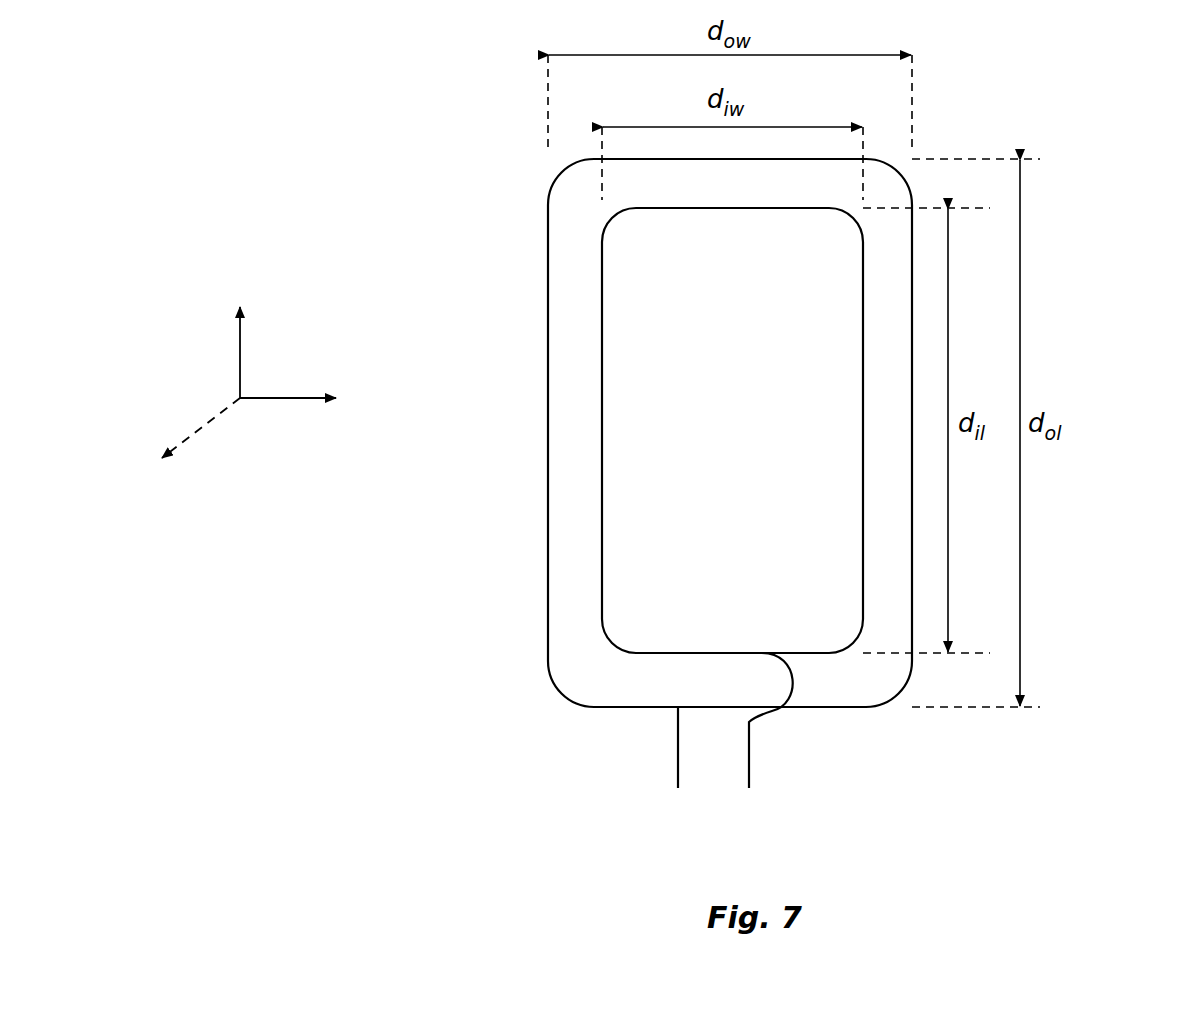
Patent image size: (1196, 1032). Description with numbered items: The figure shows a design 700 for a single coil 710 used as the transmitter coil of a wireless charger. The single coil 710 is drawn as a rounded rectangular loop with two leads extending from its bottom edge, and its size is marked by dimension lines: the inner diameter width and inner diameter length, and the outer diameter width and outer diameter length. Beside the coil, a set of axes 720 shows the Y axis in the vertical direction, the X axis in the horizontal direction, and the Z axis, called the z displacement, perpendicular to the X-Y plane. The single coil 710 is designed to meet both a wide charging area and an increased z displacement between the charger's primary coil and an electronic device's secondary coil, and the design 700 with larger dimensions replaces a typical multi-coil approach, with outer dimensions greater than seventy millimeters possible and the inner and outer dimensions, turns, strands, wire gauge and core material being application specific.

The design 700 is at (1103, 95).
The single coil 710 is at (548, 432).
The axes 720 is at (243, 402).